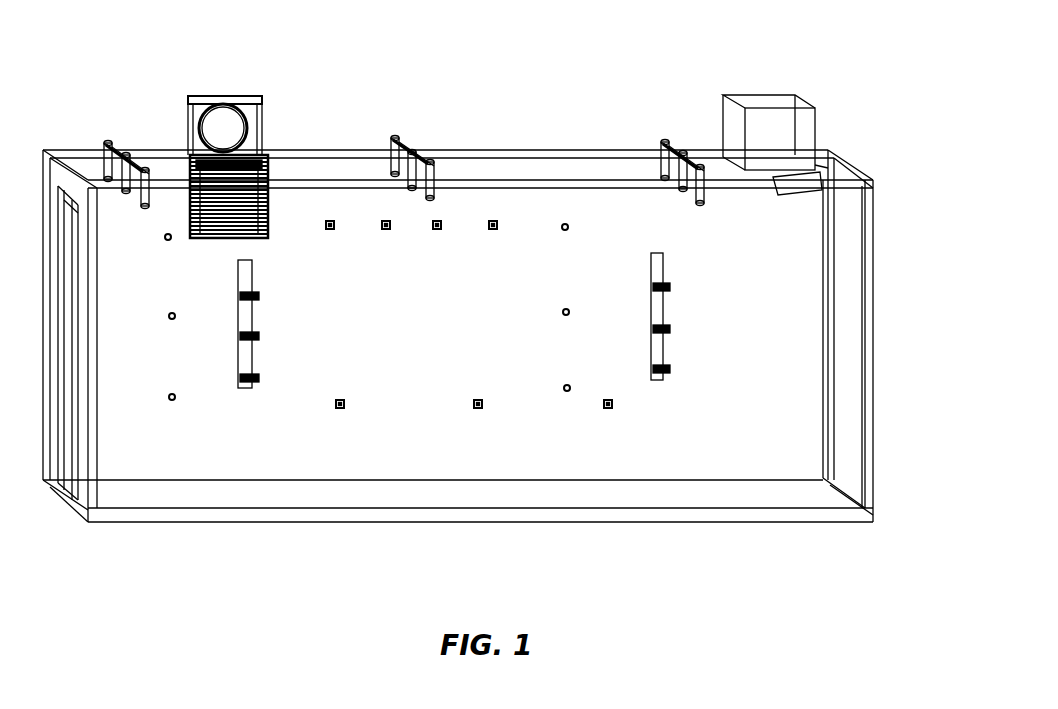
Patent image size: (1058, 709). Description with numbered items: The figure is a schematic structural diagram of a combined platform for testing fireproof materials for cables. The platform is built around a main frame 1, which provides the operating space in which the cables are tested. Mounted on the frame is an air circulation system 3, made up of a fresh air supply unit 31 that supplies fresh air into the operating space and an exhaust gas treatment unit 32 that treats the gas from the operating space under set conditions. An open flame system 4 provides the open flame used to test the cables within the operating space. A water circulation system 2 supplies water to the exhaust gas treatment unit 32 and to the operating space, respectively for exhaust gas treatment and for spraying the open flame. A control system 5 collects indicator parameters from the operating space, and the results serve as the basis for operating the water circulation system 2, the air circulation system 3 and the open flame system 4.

The main frame 1 is at (863, 344).
The water circulation system 2 is at (395, 137).
The air circulation system 3 is at (190, 160).
The fresh air supply unit 31 is at (226, 96).
The exhaust gas treatment unit 32 is at (746, 108).
The open flame system 4 is at (474, 409).
The control system 5 is at (494, 221).